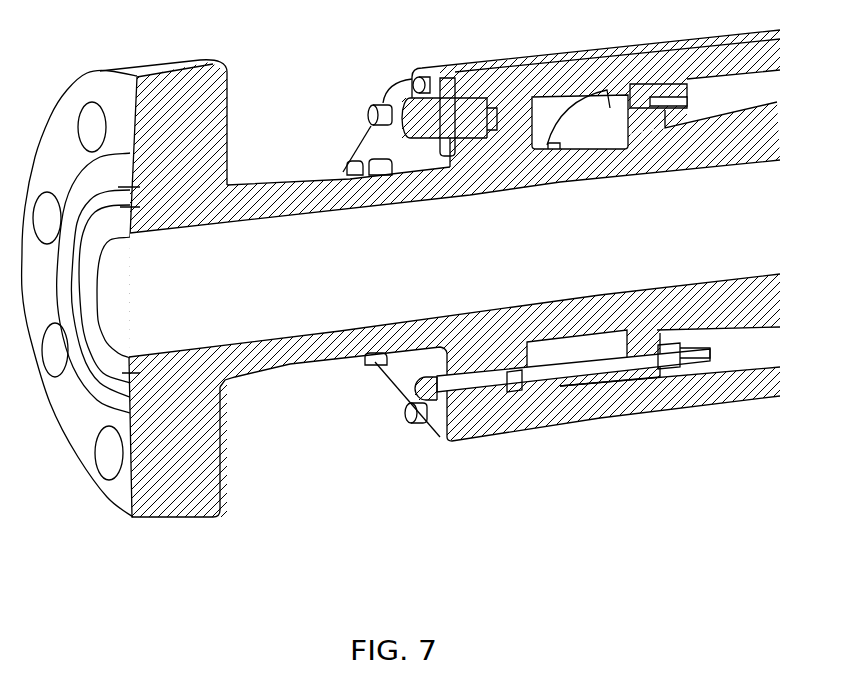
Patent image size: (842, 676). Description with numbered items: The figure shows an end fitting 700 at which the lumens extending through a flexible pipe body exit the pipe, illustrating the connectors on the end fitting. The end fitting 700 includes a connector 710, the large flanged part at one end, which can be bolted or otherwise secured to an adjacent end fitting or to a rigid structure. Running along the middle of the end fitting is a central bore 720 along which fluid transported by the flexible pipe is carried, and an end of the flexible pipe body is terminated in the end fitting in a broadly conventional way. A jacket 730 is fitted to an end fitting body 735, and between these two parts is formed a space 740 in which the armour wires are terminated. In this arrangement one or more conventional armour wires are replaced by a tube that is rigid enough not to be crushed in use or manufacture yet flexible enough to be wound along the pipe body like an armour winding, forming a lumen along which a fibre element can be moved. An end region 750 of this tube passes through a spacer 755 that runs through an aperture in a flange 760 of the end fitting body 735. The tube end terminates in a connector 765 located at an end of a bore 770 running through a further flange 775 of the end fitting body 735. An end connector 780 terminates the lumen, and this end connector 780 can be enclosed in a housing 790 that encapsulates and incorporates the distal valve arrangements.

The end fitting 700 is at (421, 338).
The connector 710 is at (183, 503).
The central bore 720 is at (292, 298).
The jacket 730 is at (645, 403).
The end fitting body 735 is at (660, 165).
The space 740 is at (760, 345).
The end region of the tube 750 is at (697, 360).
The spacer 755 is at (645, 360).
The flange 760 is at (610, 108).
The connector 765 is at (575, 420).
The bore 770 is at (497, 380).
The further flange 775 is at (473, 83).
The end connector 780 is at (465, 395).
The housing 790 is at (408, 76).